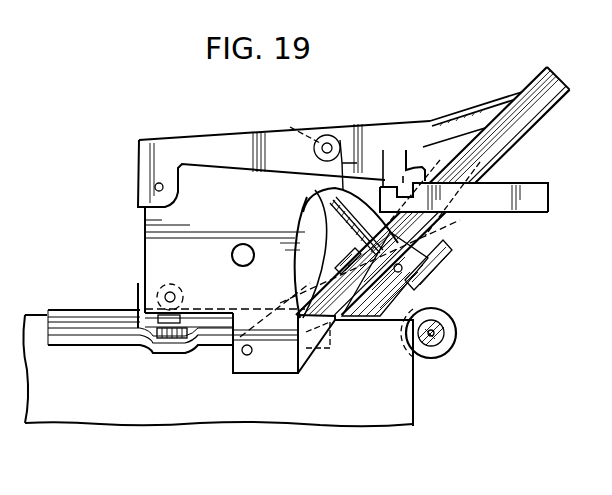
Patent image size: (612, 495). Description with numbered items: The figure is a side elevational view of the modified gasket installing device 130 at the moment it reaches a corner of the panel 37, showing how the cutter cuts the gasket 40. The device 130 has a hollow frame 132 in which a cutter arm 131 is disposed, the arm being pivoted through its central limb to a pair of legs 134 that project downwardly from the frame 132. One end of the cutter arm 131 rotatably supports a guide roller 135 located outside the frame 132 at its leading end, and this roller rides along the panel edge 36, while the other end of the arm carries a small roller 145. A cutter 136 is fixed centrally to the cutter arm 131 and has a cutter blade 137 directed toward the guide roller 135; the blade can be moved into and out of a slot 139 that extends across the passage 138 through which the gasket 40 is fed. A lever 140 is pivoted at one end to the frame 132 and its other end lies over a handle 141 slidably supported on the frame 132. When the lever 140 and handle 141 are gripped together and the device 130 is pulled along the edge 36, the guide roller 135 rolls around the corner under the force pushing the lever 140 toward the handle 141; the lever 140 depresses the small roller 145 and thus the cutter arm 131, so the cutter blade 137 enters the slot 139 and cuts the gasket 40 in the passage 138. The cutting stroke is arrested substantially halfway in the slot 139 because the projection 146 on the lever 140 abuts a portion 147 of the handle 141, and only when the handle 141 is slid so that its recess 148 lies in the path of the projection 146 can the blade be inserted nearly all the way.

The panel edge 36 is at (37, 313).
The panel 37 is at (132, 408).
The gasket 40 is at (100, 323).
The gasket installing device 130 is at (158, 138).
The cutter arm 131 is at (313, 190).
The hollow frame 132 is at (145, 218).
The legs 134 is at (269, 363).
The guide roller 135 is at (449, 335).
The cutter 136 is at (305, 225).
The cutter blade 137 is at (404, 266).
The passage 138 is at (365, 312).
The slot 139 is at (416, 278).
The lever 140 is at (351, 132).
The handle 141 is at (545, 212).
The small roller 145 is at (315, 137).
The projection 146 is at (409, 152).
The portion of the handle 147 is at (383, 147).
The recess 148 is at (464, 211).